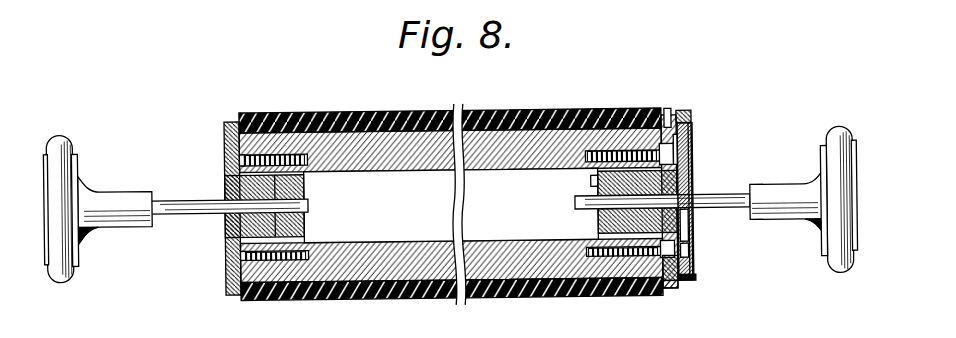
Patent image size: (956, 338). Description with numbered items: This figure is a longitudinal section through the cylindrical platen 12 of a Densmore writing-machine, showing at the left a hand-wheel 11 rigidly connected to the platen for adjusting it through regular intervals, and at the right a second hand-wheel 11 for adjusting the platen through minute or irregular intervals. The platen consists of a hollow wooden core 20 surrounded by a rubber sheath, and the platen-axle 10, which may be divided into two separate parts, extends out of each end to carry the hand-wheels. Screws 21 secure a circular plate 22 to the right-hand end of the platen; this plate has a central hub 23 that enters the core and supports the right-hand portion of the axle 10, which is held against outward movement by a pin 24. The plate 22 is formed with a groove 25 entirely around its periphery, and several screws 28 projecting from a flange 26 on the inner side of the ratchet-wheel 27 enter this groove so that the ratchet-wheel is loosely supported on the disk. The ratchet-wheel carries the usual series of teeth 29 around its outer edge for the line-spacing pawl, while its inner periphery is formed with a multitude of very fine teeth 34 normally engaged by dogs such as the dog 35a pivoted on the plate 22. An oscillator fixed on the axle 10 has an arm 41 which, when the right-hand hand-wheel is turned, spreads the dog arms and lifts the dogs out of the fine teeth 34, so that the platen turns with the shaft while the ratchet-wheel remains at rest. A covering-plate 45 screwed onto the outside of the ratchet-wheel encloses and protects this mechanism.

The platen-axle 10 is at (187, 211).
The hand-wheel 11 is at (61, 136).
The cylindrical platen 12 is at (382, 108).
The hollow wooden core 20 is at (402, 170).
The screws 21 is at (304, 250).
The circular plate 22 is at (690, 251).
The hub 23 is at (596, 182).
The pin 24 is at (598, 215).
The groove 25 is at (676, 283).
The flange 26 is at (663, 289).
The ratchet-wheel 27 is at (683, 122).
The screws 28 is at (668, 117).
The teeth 29 is at (693, 280).
The fine teeth 34 is at (689, 146).
The dog 35a is at (684, 237).
The arm 41 is at (690, 160).
The covering-plate 45 is at (690, 176).